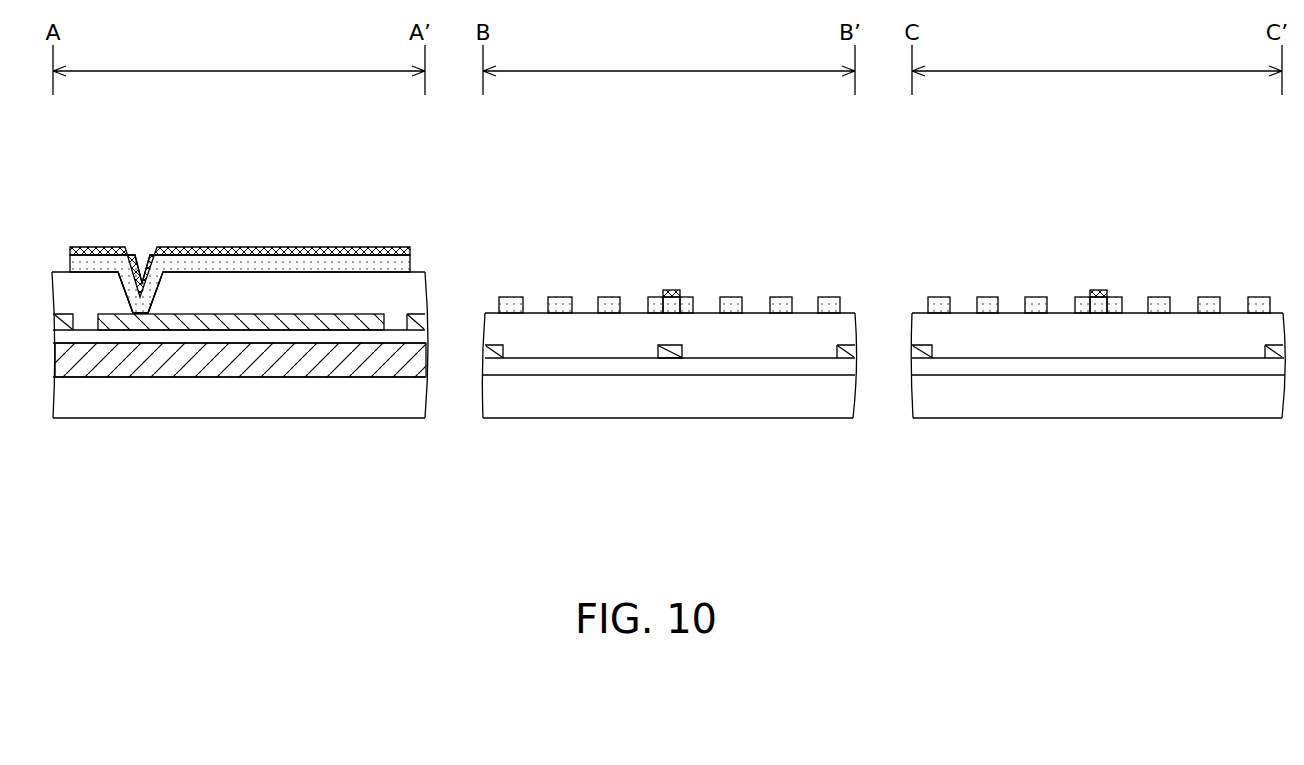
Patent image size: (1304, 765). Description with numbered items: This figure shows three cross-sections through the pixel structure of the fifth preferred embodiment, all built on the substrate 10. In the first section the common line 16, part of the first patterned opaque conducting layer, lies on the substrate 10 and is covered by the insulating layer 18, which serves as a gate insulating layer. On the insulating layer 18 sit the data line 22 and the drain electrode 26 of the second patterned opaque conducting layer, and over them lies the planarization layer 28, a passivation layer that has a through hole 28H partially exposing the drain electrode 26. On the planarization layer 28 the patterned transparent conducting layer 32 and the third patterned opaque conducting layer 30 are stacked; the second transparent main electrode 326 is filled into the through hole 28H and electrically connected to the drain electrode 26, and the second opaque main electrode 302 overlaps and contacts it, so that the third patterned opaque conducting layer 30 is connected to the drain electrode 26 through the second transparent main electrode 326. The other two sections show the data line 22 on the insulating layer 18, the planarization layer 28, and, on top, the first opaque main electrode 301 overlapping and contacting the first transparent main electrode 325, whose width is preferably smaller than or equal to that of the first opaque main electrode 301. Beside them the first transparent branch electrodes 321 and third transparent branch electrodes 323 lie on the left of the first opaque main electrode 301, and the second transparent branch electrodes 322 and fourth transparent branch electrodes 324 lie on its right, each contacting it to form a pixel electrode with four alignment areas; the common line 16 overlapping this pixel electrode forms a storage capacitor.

The substrate 10 is at (238, 409).
The common line 16 is at (63, 365).
The insulating layer 18 is at (60, 338).
The data line 22 is at (68, 317).
The drain electrode 26 is at (282, 322).
The planarization layer 28 is at (62, 276).
The through hole 28H is at (149, 239).
The third patterned opaque conducting layer 30 is at (597, 243).
The first opaque main electrode 301 is at (666, 296).
The second opaque main electrode 302 is at (375, 244).
The patterned transparent conducting layer 32 is at (670, 261).
The first transparent branch electrode 321 is at (1036, 297).
The second transparent branch electrode 322 is at (1160, 298).
The third transparent branch electrode 323 is at (608, 297).
The fourth transparent branch electrode 324 is at (732, 298).
The first transparent main electrode 325 is at (672, 305).
The second transparent main electrode 326 is at (400, 262).